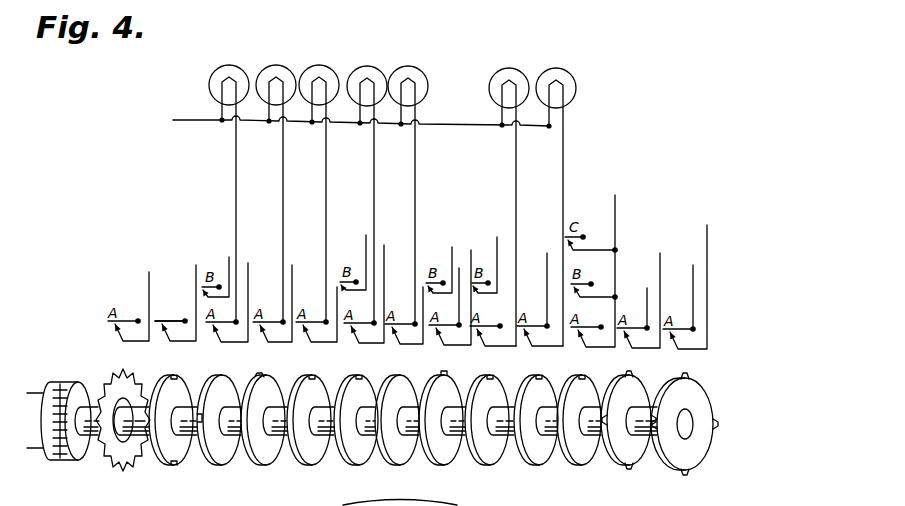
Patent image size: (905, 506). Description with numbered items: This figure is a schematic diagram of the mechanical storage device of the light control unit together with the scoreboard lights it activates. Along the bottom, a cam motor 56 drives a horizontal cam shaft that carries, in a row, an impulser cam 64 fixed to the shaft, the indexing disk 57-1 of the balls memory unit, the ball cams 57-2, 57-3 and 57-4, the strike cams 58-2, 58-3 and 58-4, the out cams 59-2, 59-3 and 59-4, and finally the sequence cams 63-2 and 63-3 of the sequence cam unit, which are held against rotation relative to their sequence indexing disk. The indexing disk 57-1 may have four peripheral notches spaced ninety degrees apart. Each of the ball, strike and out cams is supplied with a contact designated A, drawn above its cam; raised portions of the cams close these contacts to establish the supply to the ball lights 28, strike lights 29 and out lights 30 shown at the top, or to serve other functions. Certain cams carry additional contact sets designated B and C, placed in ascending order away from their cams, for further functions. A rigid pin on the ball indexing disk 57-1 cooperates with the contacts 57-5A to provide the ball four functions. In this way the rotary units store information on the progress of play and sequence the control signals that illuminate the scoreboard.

The ball lights 28 is at (328, 70).
The strike lights 29 is at (435, 70).
The out lights 30 is at (572, 72).
The contacts 57-5A is at (164, 320).
The cam motor 56 is at (62, 462).
The impulser cam 64 is at (118, 470).
The indexing disk 57-1 is at (166, 460).
The ball cam 57-2 is at (214, 460).
The ball cam 57-3 is at (258, 460).
The ball cam 57-4 is at (304, 460).
The strike cam 58-2 is at (351, 460).
The strike cam 58-3 is at (392, 460).
The strike cam 58-4 is at (436, 460).
The out cam 59-2 is at (482, 460).
The out cam 59-3 is at (531, 460).
The out cam 59-4 is at (574, 460).
The sequence cam 63-2 is at (627, 459).
The sequence cam 63-3 is at (673, 461).